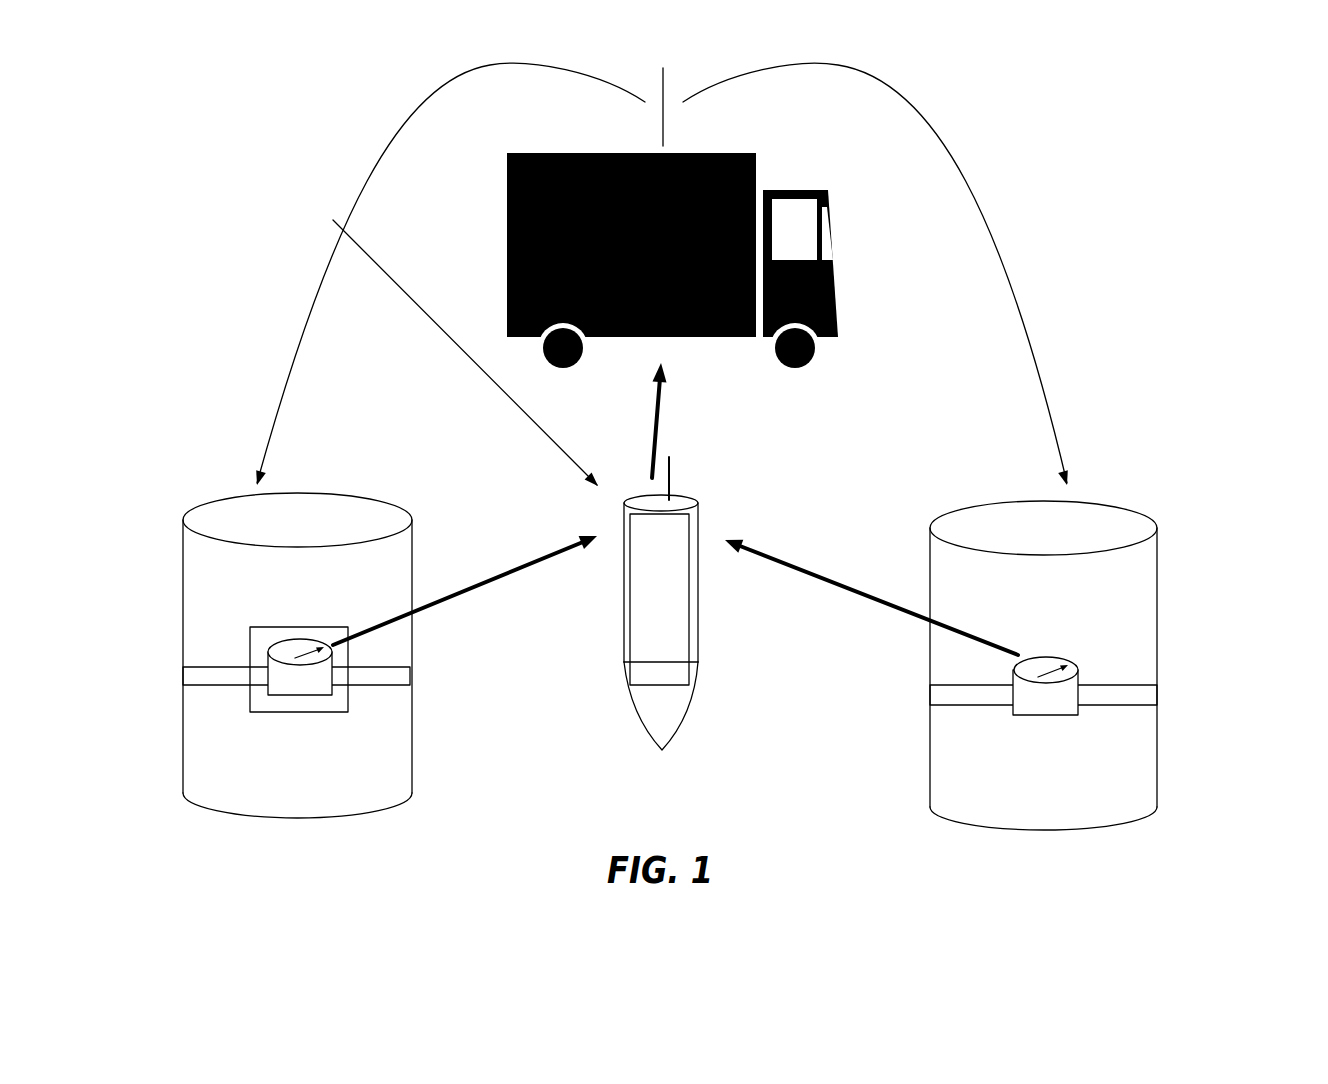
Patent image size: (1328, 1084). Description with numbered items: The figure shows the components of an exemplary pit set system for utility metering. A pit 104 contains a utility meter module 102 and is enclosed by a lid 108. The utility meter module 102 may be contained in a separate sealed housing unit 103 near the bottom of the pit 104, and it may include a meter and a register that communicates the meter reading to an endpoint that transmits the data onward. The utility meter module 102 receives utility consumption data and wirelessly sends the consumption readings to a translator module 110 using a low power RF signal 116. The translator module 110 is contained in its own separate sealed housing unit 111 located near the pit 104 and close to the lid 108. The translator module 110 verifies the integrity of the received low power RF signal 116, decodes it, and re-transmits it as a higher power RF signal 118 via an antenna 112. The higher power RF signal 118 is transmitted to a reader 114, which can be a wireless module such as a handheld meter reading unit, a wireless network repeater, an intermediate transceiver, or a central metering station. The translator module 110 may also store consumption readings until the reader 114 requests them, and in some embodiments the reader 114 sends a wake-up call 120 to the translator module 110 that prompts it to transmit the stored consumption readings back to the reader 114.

The utility meter module 102 is at (1183, 692).
The sealed housing unit 103 is at (302, 713).
The pit 104 is at (183, 715).
The lid 108 is at (200, 503).
The translator module 110 is at (655, 689).
The sealed housing unit 111 is at (690, 717).
The antenna 112 is at (672, 467).
The reader 114 is at (753, 153).
The low power RF signal 116 is at (675, 566).
The higher power RF signal 118 is at (718, 420).
The wake-up call 120 is at (667, 274).